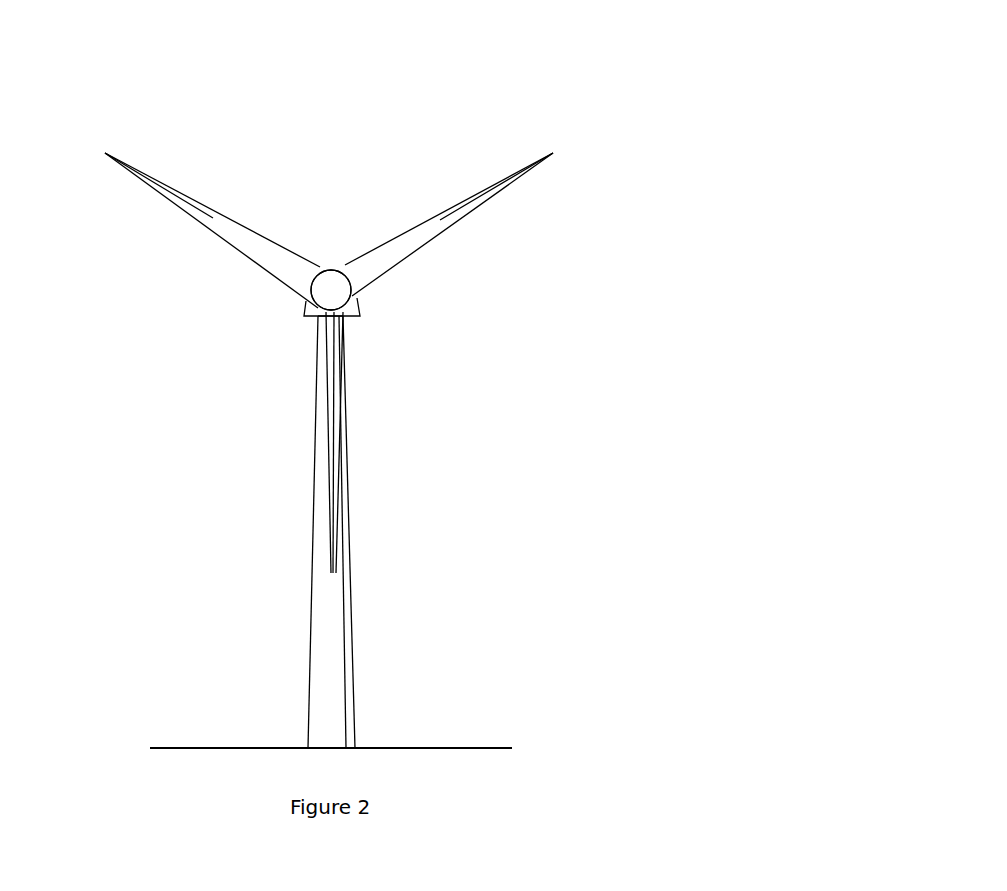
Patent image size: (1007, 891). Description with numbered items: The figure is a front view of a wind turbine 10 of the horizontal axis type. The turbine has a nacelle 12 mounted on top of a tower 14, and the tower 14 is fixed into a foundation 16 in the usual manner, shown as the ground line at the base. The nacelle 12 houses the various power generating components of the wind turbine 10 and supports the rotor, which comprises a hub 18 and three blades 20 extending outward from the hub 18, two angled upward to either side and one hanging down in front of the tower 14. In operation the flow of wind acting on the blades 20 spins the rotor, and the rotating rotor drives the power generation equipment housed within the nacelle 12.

The wind turbine 10 is at (589, 80).
The nacelle 12 is at (330, 264).
The tower 14 is at (311, 642).
The foundation 16 is at (355, 748).
The hub 18 is at (332, 295).
The blades 20 is at (212, 216).